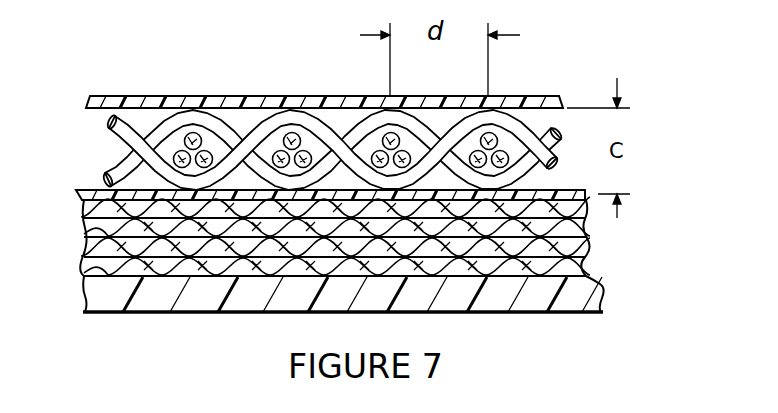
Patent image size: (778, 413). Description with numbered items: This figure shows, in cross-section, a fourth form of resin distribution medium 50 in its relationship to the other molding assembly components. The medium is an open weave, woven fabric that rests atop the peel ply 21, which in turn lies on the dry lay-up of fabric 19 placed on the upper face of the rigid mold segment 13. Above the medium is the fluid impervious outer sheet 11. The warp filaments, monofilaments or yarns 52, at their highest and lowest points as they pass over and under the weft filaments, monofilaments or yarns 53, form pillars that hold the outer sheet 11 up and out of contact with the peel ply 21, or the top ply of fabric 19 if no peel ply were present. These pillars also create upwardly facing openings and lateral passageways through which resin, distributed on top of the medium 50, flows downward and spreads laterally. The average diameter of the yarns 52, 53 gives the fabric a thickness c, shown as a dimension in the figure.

The fluid impervious outer sheet 11 is at (138, 96).
The rigid mold segment 13 is at (497, 314).
The fabric 19 is at (596, 246).
The peel ply 21 is at (580, 200).
The resin distribution medium 50 is at (178, 106).
The warp filaments, monofilaments or yarns 52 is at (119, 131).
The weft filaments, monofilaments or yarns 53 is at (196, 133).